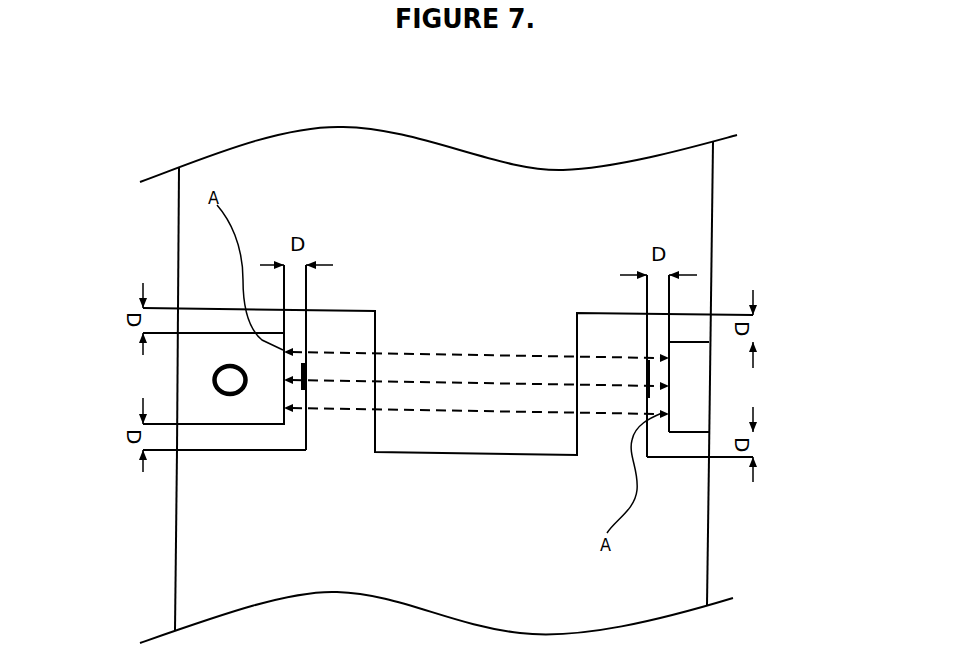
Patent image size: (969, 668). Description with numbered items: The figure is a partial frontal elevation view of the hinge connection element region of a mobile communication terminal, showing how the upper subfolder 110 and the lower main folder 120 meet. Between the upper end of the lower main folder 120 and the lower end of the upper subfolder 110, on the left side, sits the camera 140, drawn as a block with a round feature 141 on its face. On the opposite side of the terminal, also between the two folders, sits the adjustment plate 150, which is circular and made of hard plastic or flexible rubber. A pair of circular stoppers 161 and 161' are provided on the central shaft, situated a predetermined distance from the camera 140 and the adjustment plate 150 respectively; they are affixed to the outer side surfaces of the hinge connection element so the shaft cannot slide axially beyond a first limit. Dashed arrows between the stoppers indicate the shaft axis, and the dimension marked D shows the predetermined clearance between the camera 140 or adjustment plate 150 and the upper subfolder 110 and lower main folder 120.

The upper subfolder 110 is at (675, 232).
The lower main folder 120 is at (673, 558).
The camera 140 is at (235, 415).
The alignment hole 141 is at (232, 381).
The adjustment plate 150 is at (685, 407).
The circular stopper 161 is at (333, 349).
The circular stopper 161' is at (618, 353).